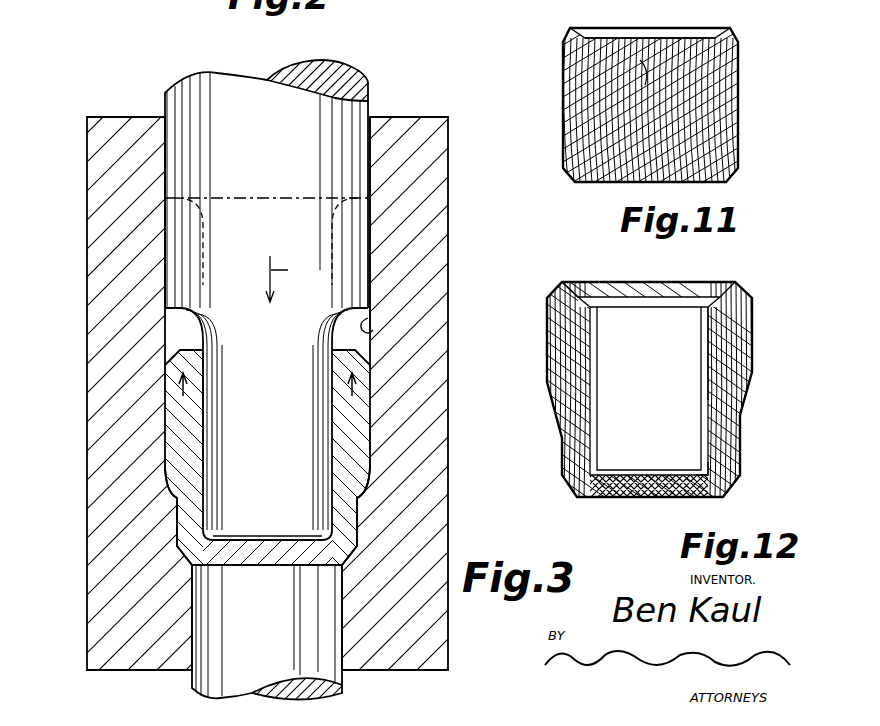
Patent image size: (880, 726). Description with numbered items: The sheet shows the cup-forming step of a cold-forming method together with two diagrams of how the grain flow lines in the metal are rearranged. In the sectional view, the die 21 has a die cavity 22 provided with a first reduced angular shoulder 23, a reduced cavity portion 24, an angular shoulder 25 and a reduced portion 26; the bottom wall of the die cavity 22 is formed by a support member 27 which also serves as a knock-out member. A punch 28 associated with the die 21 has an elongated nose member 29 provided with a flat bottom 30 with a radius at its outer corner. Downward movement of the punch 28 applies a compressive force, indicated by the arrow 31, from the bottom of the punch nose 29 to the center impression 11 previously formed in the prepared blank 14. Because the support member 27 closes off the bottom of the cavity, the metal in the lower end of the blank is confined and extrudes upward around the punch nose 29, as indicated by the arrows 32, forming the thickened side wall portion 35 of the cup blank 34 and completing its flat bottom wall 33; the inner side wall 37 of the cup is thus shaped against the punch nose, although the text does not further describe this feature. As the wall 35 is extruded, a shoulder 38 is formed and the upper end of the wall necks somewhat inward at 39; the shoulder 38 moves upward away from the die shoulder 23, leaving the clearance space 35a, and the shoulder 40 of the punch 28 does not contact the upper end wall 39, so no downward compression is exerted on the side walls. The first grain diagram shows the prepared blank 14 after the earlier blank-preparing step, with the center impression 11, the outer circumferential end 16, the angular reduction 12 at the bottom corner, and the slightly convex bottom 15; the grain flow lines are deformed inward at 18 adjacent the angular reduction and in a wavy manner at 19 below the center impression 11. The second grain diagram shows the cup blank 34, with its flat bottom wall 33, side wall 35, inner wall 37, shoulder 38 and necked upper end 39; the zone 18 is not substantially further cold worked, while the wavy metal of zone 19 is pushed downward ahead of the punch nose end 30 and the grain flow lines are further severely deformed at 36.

In FIG. 11, the center impression 11 is at (672, 50).
In FIG. 11, the angular reduction 12 is at (735, 170).
In FIG. 3, the prepared blank 14 is at (175, 452).
In FIG. 11, the prepared blank 14 is at (738, 128).
In FIG. 12, the prepared blank 14 is at (651, 415).
In FIG. 11, the convex shape 15 is at (612, 183).
In FIG. 11, the outer circumferential end 16 is at (738, 40).
In FIG. 11, the inwardly deformed grain flow lines 18 is at (714, 182).
In FIG. 12, the inwardly deformed grain flow lines 18 is at (735, 491).
In FIG. 11, the wavy grain flow lines 19 is at (641, 62).
In FIG. 3, the die 21 is at (437, 365).
In FIG. 3, the die cavity 22 is at (366, 326).
In FIG. 3, the first reduced angular shoulder 23 is at (360, 490).
In FIG. 3, the reduced cavity portion 24 is at (357, 517).
In FIG. 3, the angular shoulder 25 is at (350, 560).
In FIG. 3, the reduced portion 26 is at (345, 648).
In FIG. 3, the support member 27 is at (203, 597).
In FIG. 3, the punch 28 is at (365, 108).
In FIG. 3, the elongated nose member 29 is at (266, 424).
In FIG. 3, the flat bottom 30 is at (250, 538).
In FIG. 3, the compressive force arrow 31 is at (290, 279).
In FIG. 3, the upward extrusion arrows 32 is at (350, 393).
In FIG. 3, the flat bottom wall 33 is at (275, 552).
In FIG. 12, the flat bottom wall 33 is at (651, 495).
In FIG. 3, the cup blank 34 is at (178, 500).
In FIG. 12, the cup blank 34 is at (752, 352).
In FIG. 3, the thickened side wall portion 35 is at (180, 411).
In FIG. 12, the thickened side wall portion 35 is at (560, 345).
In FIG. 3, the clearance space 35a is at (375, 478).
In FIG. 12, the severely deformed grain flow lines 36 is at (700, 478).
In FIG. 3, the inner side wall of cup 37 is at (200, 470).
In FIG. 12, the inner side wall of cup 37 is at (708, 330).
In FIG. 3, the shoulder 38 is at (365, 440).
In FIG. 12, the shoulder 38 is at (744, 402).
In FIG. 3, the inwardly necked upper end wall 39 is at (362, 334).
In FIG. 12, the inwardly necked upper end wall 39 is at (572, 284).
In FIG. 3, the punch shoulder 40 is at (372, 312).